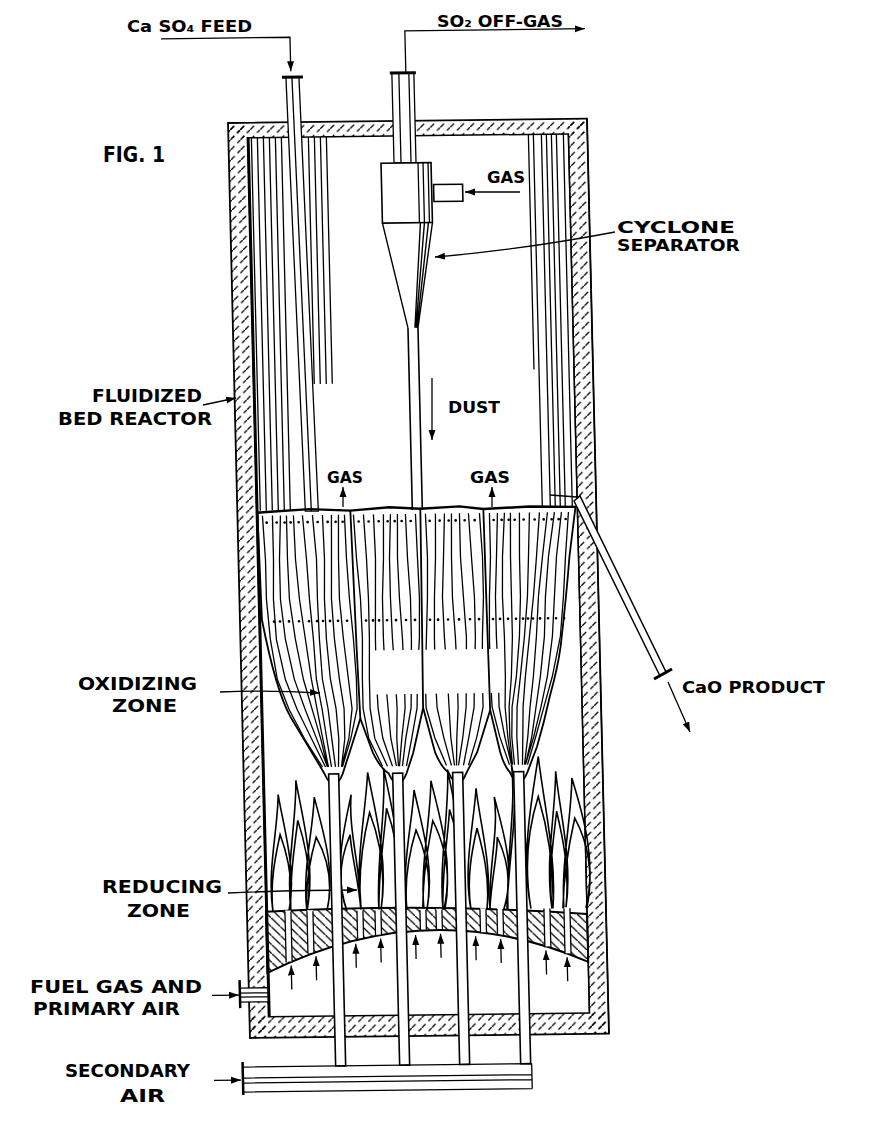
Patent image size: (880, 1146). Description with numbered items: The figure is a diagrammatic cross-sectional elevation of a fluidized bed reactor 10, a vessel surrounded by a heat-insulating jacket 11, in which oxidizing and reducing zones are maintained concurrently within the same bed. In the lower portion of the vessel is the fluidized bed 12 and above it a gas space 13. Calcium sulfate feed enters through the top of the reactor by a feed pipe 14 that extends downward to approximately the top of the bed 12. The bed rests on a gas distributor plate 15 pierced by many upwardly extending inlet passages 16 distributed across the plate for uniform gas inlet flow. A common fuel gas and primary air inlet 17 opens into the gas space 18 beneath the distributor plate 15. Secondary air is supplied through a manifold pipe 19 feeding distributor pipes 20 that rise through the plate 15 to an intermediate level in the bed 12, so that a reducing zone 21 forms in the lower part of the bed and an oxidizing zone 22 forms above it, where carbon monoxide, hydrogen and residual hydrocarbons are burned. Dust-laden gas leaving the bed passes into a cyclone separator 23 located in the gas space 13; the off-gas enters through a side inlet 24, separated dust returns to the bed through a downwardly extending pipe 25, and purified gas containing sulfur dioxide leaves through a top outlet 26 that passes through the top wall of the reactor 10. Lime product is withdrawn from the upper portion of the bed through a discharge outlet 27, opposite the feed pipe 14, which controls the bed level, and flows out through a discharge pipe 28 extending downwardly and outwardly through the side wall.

The fluidized bed reactor 10 is at (232, 266).
The heat-insulating jacket 11 is at (590, 358).
The fluidized bed 12 is at (508, 504).
The gas space 13 is at (511, 334).
The feed pipe 14 is at (297, 198).
The gas distributor plate 15 is at (287, 938).
The inlet passages 16 is at (358, 925).
The fuel gas and primary air inlet 17 is at (256, 1012).
The gas space 18 is at (438, 992).
The manifold pipe 19 is at (300, 1077).
The distributor pipes 20 is at (470, 1055).
The reducing zone 21 is at (358, 843).
The oxidizing zone 22 is at (321, 718).
The cyclone separator 23 is at (381, 193).
The side inlet 24 is at (441, 185).
The downwardly extending pipe 25 is at (413, 383).
The top outlet 26 is at (415, 97).
The discharge outlet 27 is at (582, 492).
The discharge pipe 28 is at (618, 567).